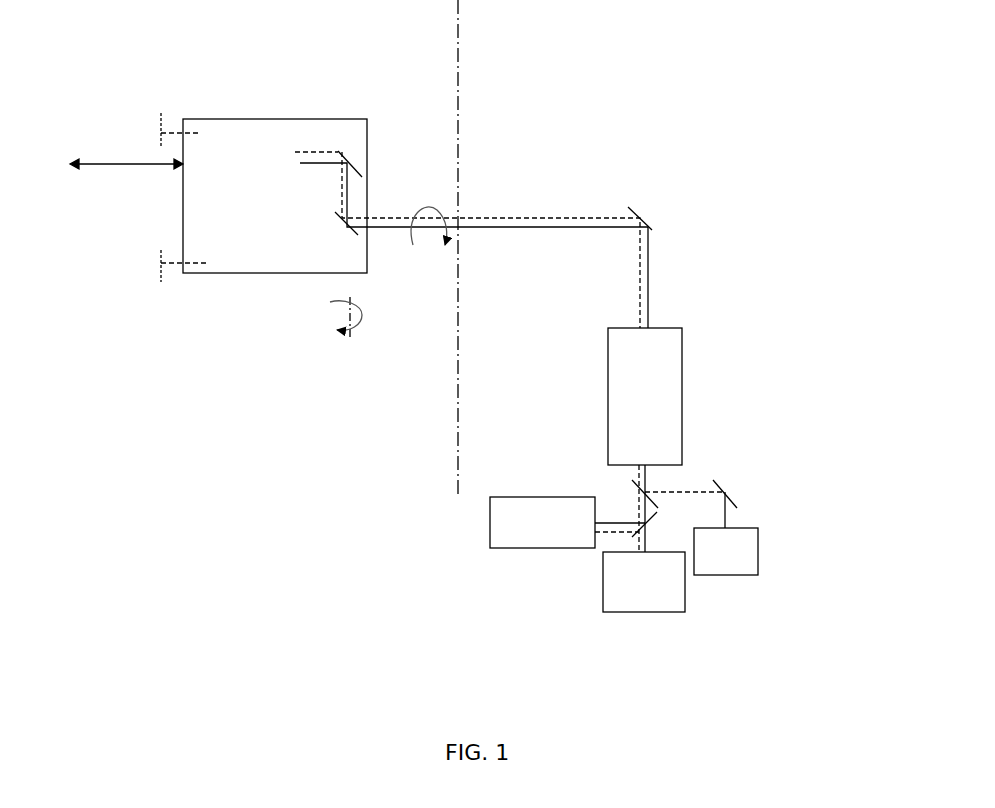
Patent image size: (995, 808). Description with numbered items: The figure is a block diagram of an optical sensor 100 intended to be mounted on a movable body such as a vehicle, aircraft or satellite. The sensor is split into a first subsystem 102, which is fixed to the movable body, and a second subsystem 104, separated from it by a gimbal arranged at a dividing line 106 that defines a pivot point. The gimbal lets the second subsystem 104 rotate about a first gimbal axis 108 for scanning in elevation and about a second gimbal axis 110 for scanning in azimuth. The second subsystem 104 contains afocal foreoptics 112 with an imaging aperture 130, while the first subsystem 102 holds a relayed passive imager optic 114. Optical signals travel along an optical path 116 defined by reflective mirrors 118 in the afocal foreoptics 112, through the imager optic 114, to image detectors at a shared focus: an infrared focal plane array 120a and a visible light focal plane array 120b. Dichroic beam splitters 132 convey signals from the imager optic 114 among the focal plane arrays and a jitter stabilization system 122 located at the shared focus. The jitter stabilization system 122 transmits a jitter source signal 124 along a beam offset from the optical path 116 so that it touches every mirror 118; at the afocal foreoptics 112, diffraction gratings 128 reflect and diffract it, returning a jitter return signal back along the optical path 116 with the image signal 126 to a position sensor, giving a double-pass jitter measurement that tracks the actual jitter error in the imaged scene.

The optical sensor 100 is at (280, 45).
The first subsystem 102 is at (732, 102).
The second subsystem 104 is at (312, 400).
The dividing line 106 is at (458, 338).
The first gimbal axis 108 is at (332, 302).
The second gimbal axis 110 is at (423, 242).
The afocal foreoptics 112 is at (220, 275).
The relayed passive imager optic 114 is at (682, 362).
The optical path 116 is at (375, 218).
The reflective mirrors 118 is at (360, 175).
The infrared focal plane array 120a is at (665, 612).
The visible light focal plane array 120b is at (758, 553).
The jitter stabilization system 122 is at (490, 532).
The jitter source signal 124 is at (563, 218).
The image signal 126 is at (515, 227).
The diffraction gratings 128 is at (161, 135).
The imaging aperture 130 is at (138, 190).
The dichroic beam splitters 132 is at (650, 520).